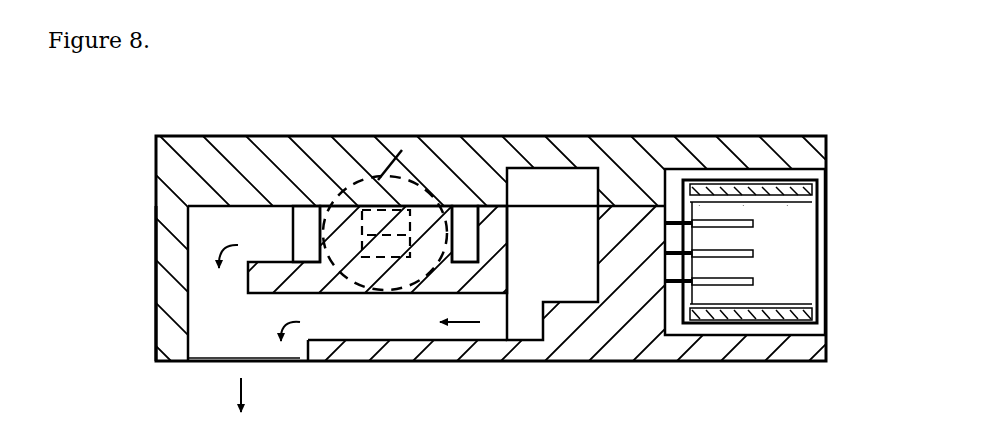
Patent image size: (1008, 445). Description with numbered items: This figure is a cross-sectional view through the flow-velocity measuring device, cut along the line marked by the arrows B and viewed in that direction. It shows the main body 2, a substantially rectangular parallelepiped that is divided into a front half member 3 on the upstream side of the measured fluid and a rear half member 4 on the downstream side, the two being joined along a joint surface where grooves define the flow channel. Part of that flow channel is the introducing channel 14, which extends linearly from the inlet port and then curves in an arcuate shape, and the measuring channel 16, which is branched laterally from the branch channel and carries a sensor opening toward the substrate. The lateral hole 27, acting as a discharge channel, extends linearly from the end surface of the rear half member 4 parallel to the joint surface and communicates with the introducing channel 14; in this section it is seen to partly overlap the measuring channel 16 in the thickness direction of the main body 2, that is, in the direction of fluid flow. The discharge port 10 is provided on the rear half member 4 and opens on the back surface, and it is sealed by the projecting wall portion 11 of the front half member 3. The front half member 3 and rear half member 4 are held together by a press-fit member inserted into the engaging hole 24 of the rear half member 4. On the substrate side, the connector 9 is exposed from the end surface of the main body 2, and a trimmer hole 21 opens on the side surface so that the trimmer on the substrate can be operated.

The main body 2 is at (147, 152).
The front half member 3 is at (305, 135).
The projecting wall portion 11 is at (155, 282).
The introducing channel 14 is at (569, 258).
The measuring channel 16 is at (286, 251).
The engaging hole 24 is at (404, 128).
The lateral hole 27 is at (410, 336).
The rear half member 4 is at (403, 362).
The discharge port 10 is at (300, 350).
The trimmer hole 21 is at (820, 330).
The connector 9 is at (806, 255).